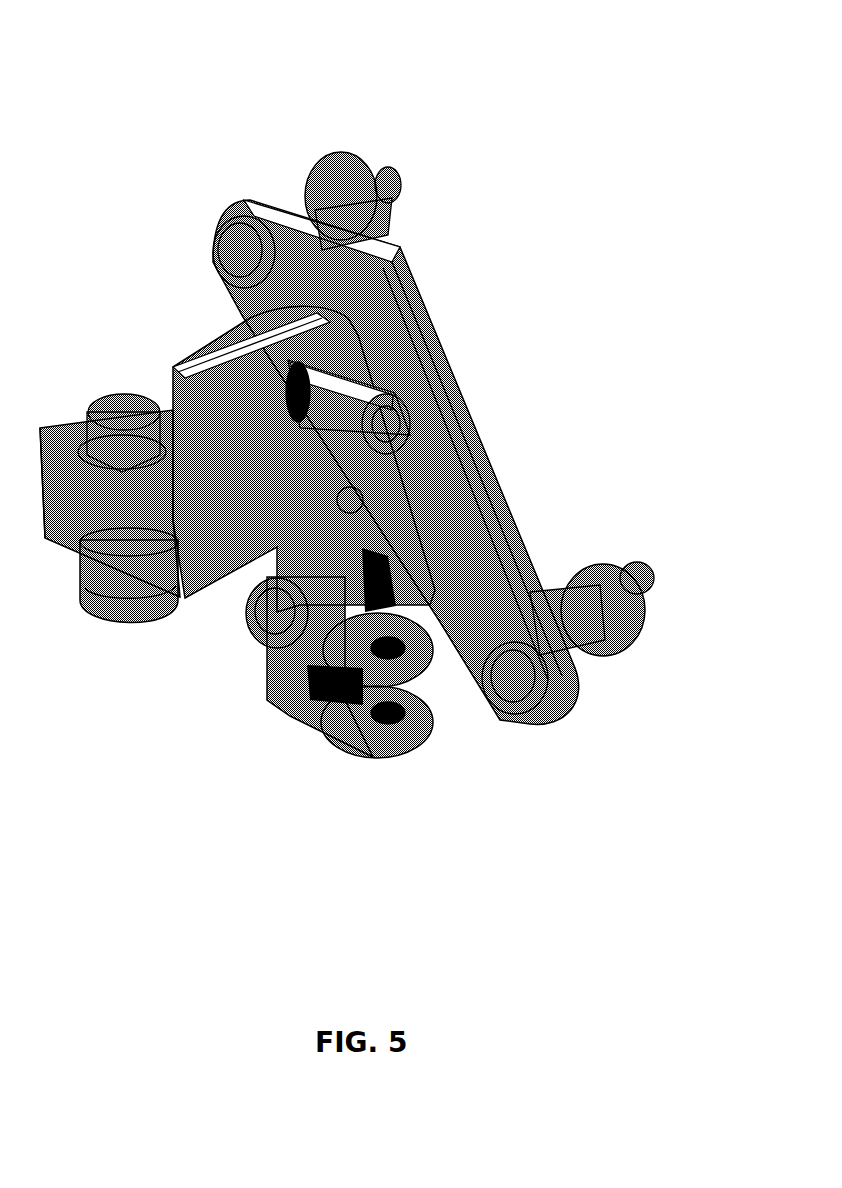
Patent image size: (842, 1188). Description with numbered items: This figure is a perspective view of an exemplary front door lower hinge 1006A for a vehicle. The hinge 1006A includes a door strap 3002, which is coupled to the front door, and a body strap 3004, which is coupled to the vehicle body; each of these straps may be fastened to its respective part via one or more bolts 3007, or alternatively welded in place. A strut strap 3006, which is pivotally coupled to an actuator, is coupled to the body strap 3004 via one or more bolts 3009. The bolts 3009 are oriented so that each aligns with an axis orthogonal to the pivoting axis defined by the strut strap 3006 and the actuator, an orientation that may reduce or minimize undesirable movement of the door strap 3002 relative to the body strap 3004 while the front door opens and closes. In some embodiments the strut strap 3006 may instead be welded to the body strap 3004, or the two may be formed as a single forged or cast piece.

The front door lower hinge 1006A is at (169, 93).
The door strap 3002 is at (220, 400).
The body strap 3004 is at (383, 303).
The strut strap 3006 is at (287, 680).
The bolts 3007 is at (400, 178).
The bolts 3009 is at (352, 500).